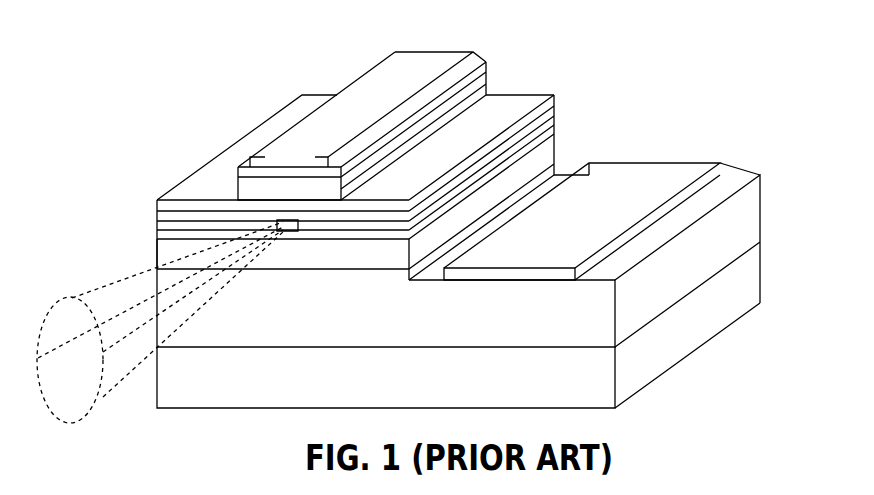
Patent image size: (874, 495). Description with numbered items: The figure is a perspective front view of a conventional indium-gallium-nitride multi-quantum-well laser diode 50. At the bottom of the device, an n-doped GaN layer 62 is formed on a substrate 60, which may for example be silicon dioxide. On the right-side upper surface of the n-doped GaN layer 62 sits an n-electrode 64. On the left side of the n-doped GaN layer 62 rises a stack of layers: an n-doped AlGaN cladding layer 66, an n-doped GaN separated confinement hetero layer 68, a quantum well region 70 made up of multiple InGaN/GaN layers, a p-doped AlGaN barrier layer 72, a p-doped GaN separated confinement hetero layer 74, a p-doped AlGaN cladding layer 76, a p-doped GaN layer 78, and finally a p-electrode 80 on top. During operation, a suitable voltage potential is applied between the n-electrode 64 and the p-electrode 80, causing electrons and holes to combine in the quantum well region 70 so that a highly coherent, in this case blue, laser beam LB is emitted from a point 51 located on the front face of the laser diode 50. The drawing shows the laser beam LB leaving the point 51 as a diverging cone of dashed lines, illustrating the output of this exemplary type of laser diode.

The laser diode 50 is at (118, 57).
The point 51 is at (285, 232).
The substrate 60 is at (393, 389).
The n-doped GaN layer 62 is at (391, 335).
The n-electrode 64 is at (628, 169).
The n-doped AlGaN cladding layer 66 is at (156, 261).
The n-doped GaN SCH layer 68 is at (156, 240).
The quantum well region 70 is at (158, 231).
The p-doped AlGaN barrier layer 72 is at (157, 216).
The p-doped GaN SCH layer 74 is at (157, 201).
The p-doped AlGaN cladding layer 76 is at (248, 190).
The p-doped GaN layer 78 is at (247, 171).
The p-electrode 80 is at (436, 58).
The laser beam LB is at (117, 384).